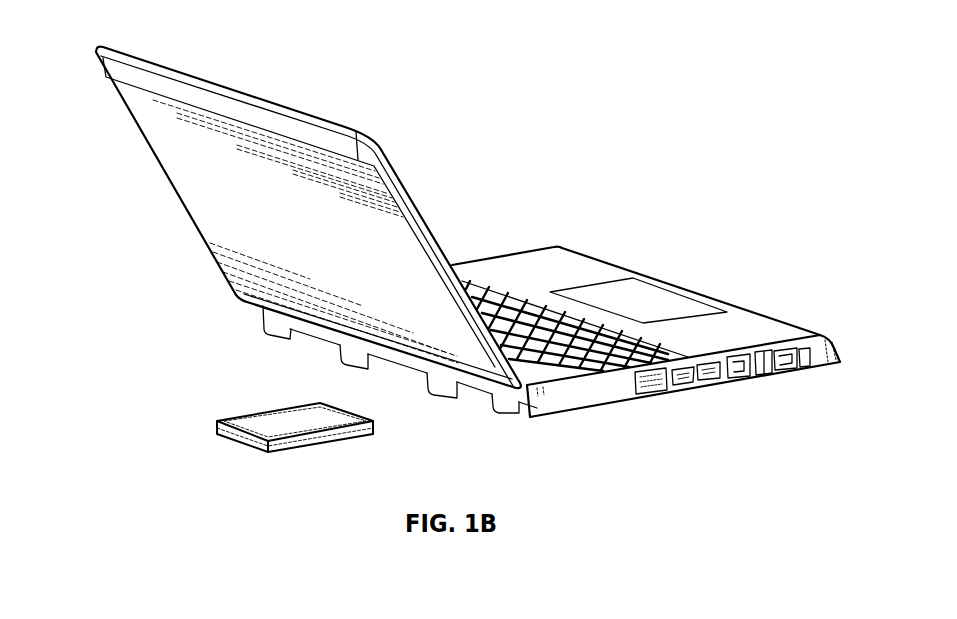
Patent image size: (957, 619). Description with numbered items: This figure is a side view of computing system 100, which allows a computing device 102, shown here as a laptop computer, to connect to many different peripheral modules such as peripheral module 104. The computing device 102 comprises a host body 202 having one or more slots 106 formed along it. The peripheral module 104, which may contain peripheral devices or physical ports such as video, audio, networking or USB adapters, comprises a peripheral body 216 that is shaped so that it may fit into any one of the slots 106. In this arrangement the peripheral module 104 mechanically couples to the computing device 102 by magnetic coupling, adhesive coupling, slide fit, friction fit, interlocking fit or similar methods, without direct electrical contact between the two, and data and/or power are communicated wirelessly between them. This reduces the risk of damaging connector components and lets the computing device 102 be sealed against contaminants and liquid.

The computing system 100 is at (652, 75).
The computing device 102 is at (755, 293).
The peripheral module 104 is at (228, 404).
The slots 106 is at (323, 341).
The host body 202 is at (580, 397).
The peripheral body 216 is at (320, 438).